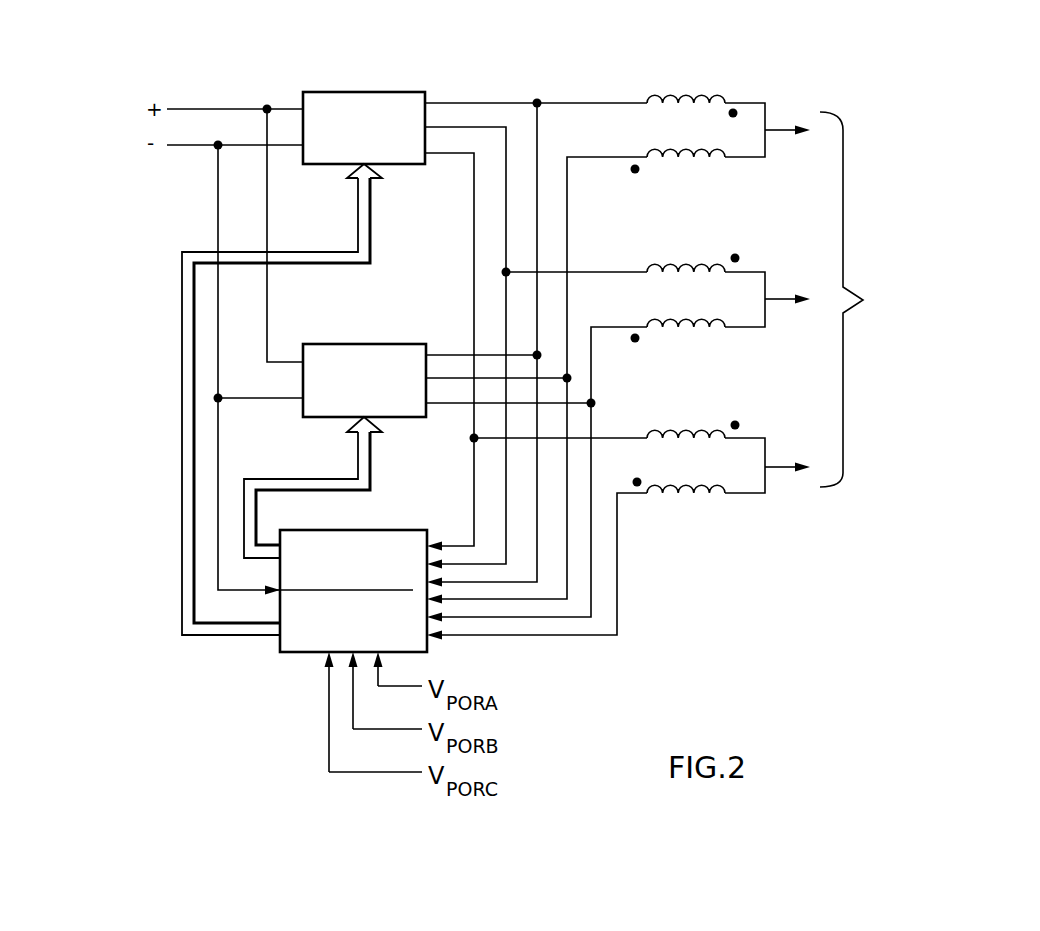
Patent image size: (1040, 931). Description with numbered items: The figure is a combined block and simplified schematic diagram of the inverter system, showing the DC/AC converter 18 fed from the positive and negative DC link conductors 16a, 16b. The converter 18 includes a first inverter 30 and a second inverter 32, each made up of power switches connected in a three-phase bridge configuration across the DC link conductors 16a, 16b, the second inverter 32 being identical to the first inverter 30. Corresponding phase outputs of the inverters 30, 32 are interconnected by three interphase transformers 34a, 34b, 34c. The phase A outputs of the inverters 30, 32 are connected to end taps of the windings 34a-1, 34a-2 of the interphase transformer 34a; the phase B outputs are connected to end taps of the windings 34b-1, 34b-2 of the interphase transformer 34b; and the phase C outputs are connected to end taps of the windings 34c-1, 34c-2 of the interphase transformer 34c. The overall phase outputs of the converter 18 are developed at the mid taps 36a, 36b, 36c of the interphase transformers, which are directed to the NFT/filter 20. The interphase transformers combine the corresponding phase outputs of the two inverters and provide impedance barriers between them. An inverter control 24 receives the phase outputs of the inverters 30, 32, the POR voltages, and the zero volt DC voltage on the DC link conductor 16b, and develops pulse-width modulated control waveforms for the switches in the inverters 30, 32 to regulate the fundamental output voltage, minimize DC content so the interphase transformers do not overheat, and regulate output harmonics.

The DC link conductor 16a is at (238, 108).
The DC link conductor 16b is at (202, 148).
The DC/AC converter 18 is at (361, 58).
The NFT/filter 20 is at (902, 299).
The inverter control 24 is at (397, 530).
The first inverter 30 is at (407, 92).
The second inverter 32 is at (377, 344).
The interphase transformer 34a is at (686, 121).
The winding 34a-1 is at (643, 96).
The winding 34a-2 is at (687, 152).
The interphase transformer 34b is at (686, 293).
The winding 34b-1 is at (641, 268).
The winding 34b-2 is at (687, 324).
The interphase transformer 34c is at (695, 470).
The winding 34c-1 is at (643, 435).
The winding 34c-2 is at (687, 490).
The mid tap 36a is at (772, 127).
The mid tap 36b is at (771, 296).
The mid tap 36c is at (771, 464).